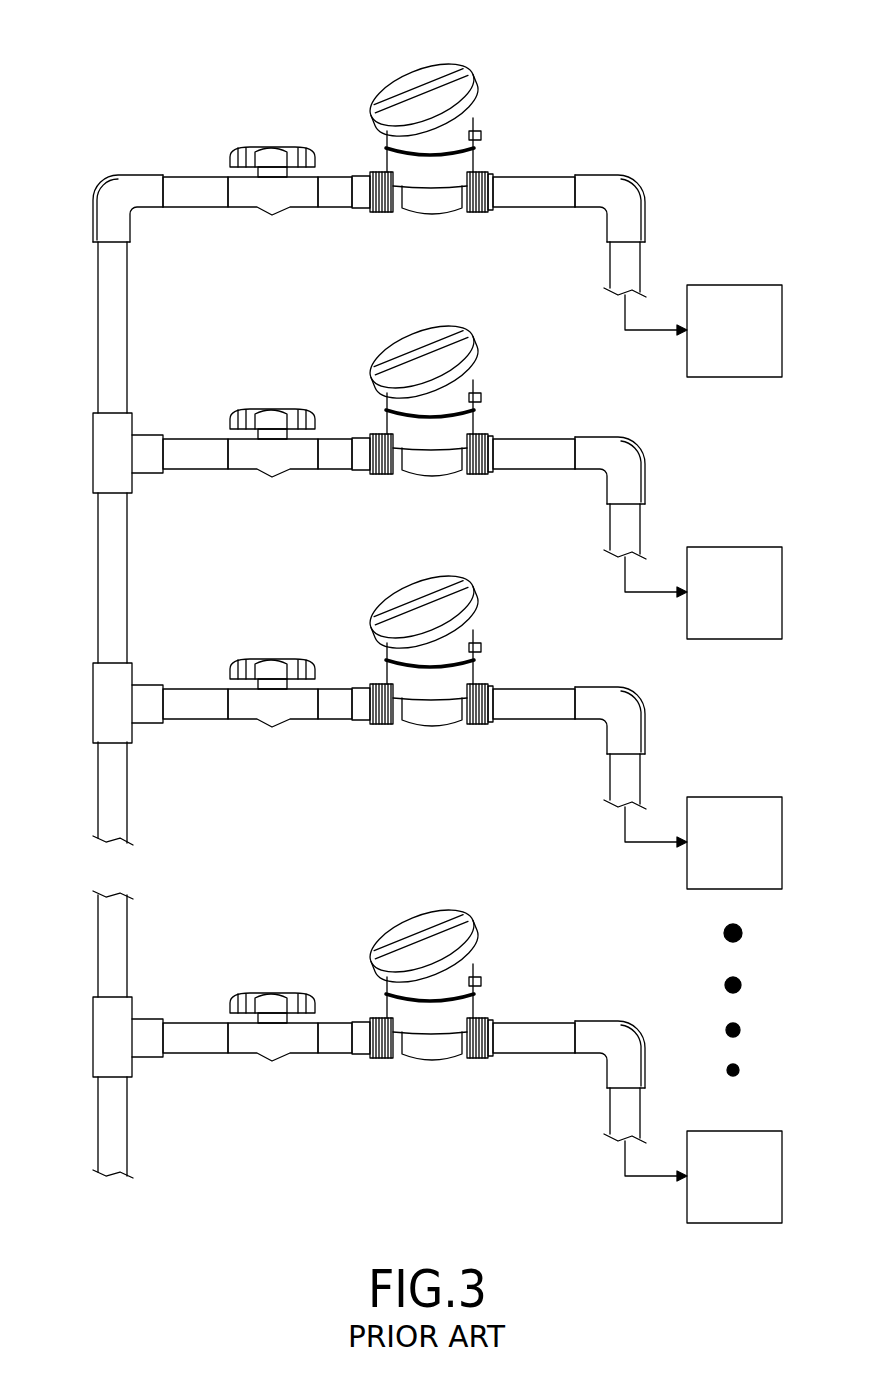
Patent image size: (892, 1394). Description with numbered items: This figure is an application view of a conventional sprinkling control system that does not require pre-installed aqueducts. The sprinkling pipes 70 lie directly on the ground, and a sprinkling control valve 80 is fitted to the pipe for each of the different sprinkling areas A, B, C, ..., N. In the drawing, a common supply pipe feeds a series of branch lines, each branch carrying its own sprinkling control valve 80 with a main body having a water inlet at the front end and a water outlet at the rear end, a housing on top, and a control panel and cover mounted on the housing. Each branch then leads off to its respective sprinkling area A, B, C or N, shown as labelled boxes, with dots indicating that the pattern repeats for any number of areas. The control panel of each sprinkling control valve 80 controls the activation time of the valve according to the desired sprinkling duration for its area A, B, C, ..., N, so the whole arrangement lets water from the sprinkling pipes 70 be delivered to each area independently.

The sprinkling pipe 70 is at (548, 207).
The sprinkling control valve 80 is at (512, 77).
The sprinkling area A is at (734, 331).
The sprinkling area B is at (734, 593).
The sprinkling area C is at (734, 843).
The sprinkling area N is at (734, 1177).